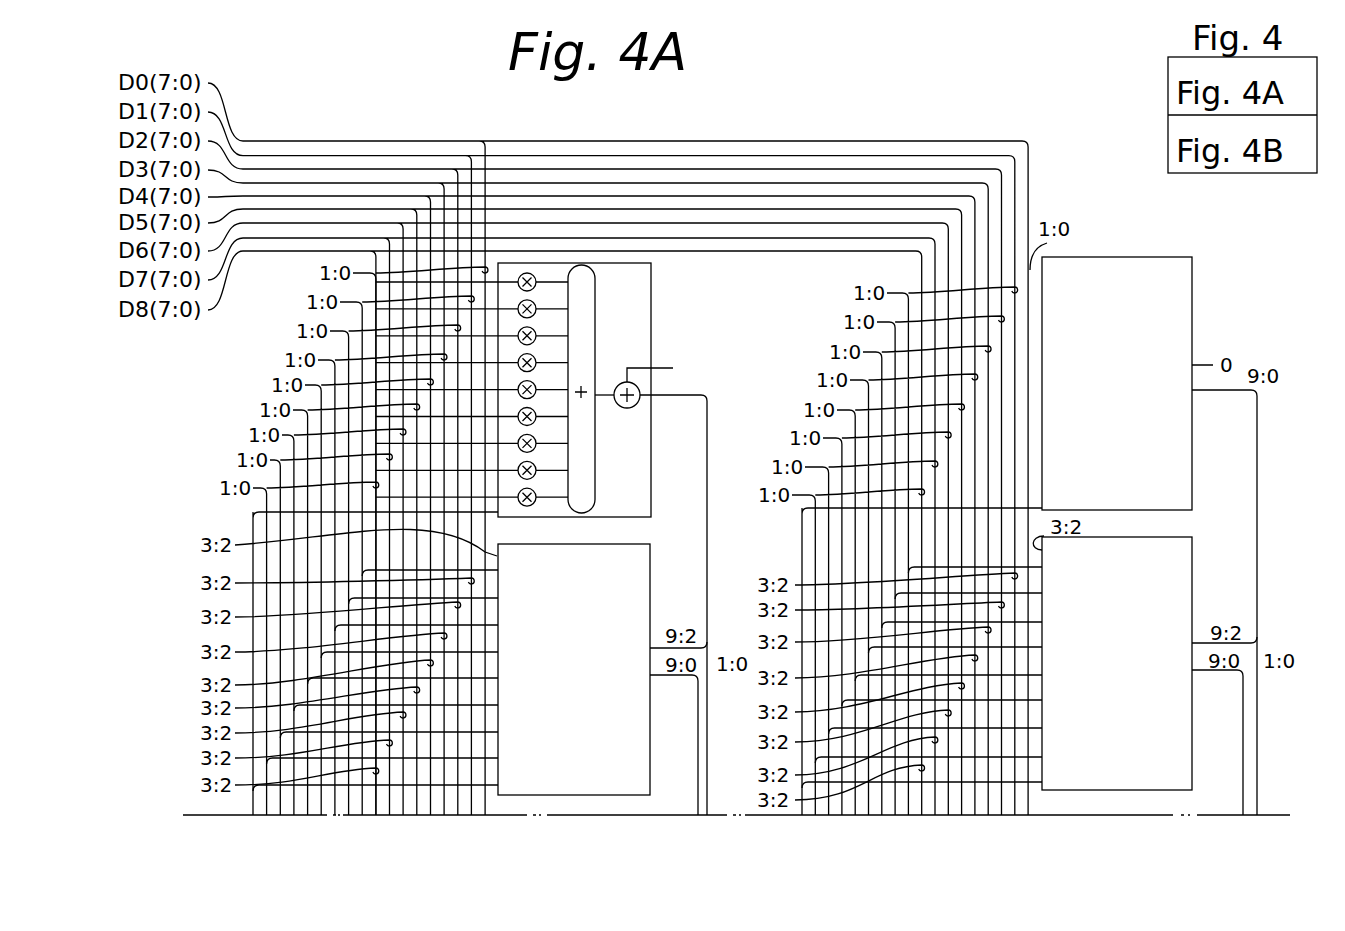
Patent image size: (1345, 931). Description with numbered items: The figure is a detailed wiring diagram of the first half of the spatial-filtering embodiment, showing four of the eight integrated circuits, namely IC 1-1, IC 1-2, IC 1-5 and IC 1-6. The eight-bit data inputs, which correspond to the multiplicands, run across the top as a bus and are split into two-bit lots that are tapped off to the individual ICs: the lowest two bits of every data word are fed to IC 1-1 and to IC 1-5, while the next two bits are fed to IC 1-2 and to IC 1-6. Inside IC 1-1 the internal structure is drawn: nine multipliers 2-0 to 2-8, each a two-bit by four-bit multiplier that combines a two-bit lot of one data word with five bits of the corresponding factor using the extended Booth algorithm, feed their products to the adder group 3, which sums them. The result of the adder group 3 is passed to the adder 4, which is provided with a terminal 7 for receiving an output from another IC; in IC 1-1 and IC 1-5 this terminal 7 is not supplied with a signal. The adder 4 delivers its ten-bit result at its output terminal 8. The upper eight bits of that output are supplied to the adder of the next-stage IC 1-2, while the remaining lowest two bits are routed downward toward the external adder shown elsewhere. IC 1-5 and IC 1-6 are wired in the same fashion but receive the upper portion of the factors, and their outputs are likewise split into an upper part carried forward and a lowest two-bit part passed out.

The IC 1-1 is at (651, 300).
The IC 1-2 is at (642, 544).
The IC 1-5 is at (1192, 283).
The IC 1-6 is at (1192, 553).
The multiplier 2-0 is at (536, 276).
The multiplier 2-8 is at (529, 506).
The adder group 3 is at (596, 300).
The adder 4 is at (627, 408).
The terminal 7 is at (655, 368).
The output terminal 8 is at (645, 400).